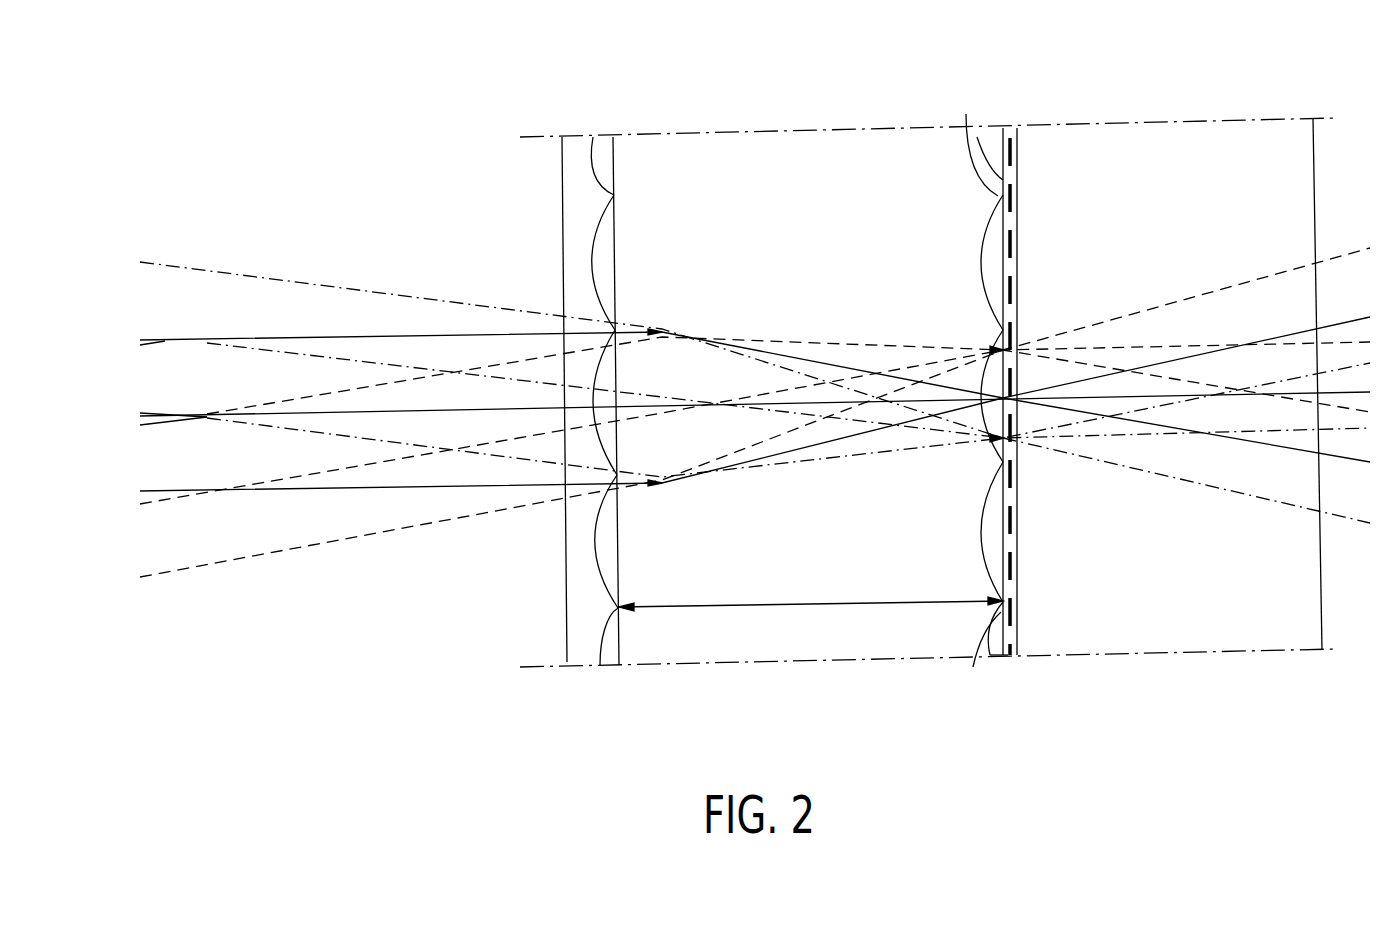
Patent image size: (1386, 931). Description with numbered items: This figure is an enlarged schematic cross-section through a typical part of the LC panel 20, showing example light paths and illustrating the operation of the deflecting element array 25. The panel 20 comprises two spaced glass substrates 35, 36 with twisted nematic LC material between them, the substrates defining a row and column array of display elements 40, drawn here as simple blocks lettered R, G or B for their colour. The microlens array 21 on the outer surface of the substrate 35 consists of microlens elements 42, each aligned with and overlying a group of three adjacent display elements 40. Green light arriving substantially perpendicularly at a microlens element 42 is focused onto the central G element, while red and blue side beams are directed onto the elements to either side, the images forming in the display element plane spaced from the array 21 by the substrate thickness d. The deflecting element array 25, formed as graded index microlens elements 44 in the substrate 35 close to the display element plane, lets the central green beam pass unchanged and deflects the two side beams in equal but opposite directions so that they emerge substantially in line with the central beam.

The LC panel 20 is at (717, 97).
The microlens array 21 is at (583, 662).
The microlens element 42 is at (614, 205).
The deflecting element array 25 is at (999, 657).
The display element 40 is at (1003, 158).
The microlens element 44 is at (998, 599).
The substrate 35 is at (858, 652).
The substrate 36 is at (1248, 640).